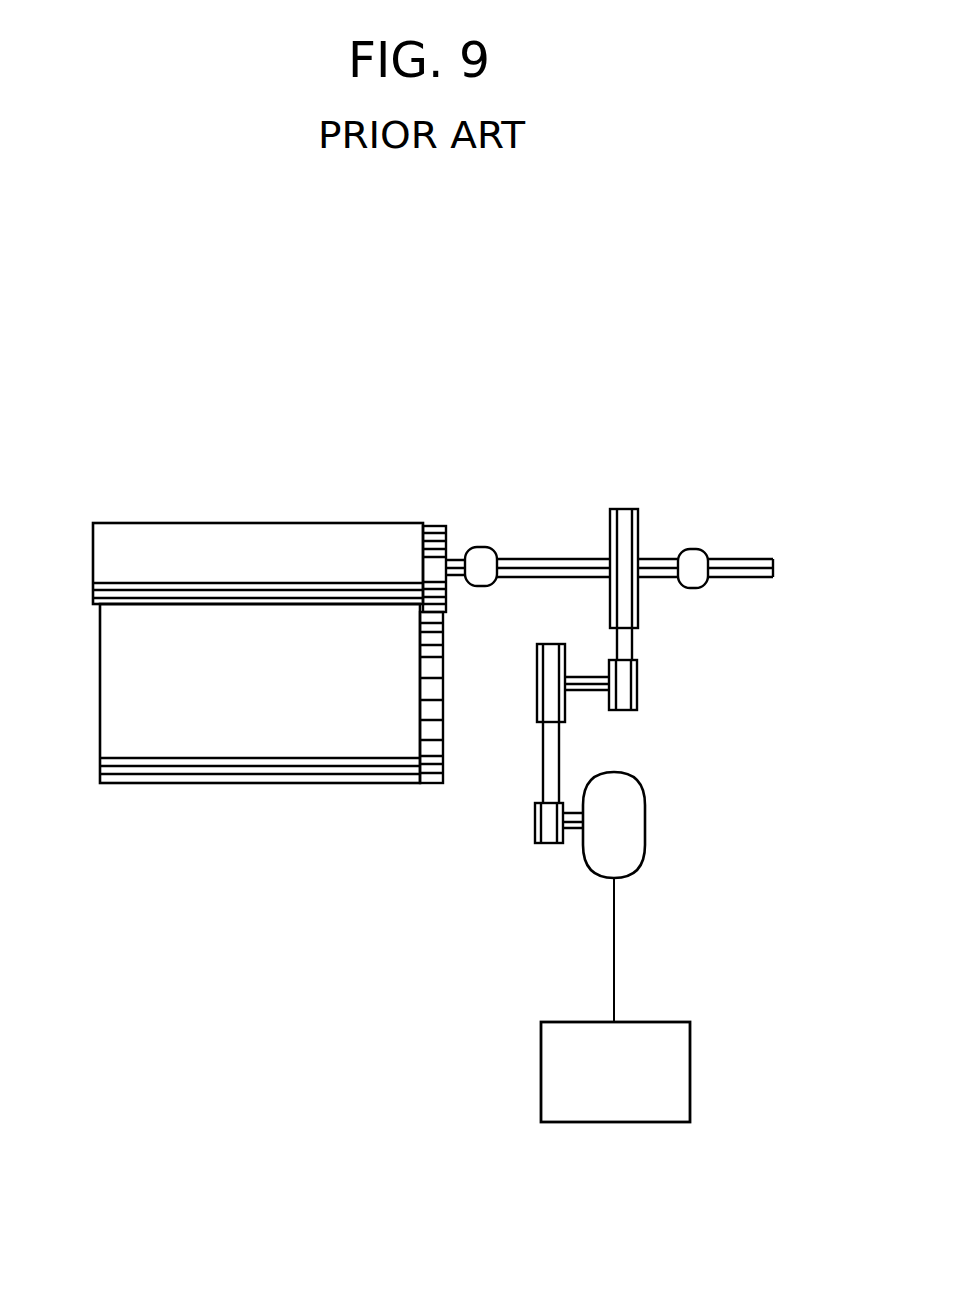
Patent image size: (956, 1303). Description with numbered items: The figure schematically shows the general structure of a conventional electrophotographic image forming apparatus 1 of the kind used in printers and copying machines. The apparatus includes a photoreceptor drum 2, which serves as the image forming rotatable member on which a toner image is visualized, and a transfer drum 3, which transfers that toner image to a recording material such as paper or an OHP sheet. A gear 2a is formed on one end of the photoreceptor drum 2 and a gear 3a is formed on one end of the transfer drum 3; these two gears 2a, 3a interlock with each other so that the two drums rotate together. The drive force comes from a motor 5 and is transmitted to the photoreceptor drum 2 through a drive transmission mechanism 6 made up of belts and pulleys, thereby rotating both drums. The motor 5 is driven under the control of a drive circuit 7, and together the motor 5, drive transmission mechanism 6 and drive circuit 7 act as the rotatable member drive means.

The image forming apparatus 1 is at (104, 392).
The photoreceptor drum 2 is at (137, 540).
The gear 2a is at (437, 523).
The transfer drum 3 is at (106, 692).
The gear 3a is at (428, 790).
The motor 5 is at (638, 849).
The drive transmission mechanism 6 is at (775, 502).
The drive circuit 7 is at (690, 1083).